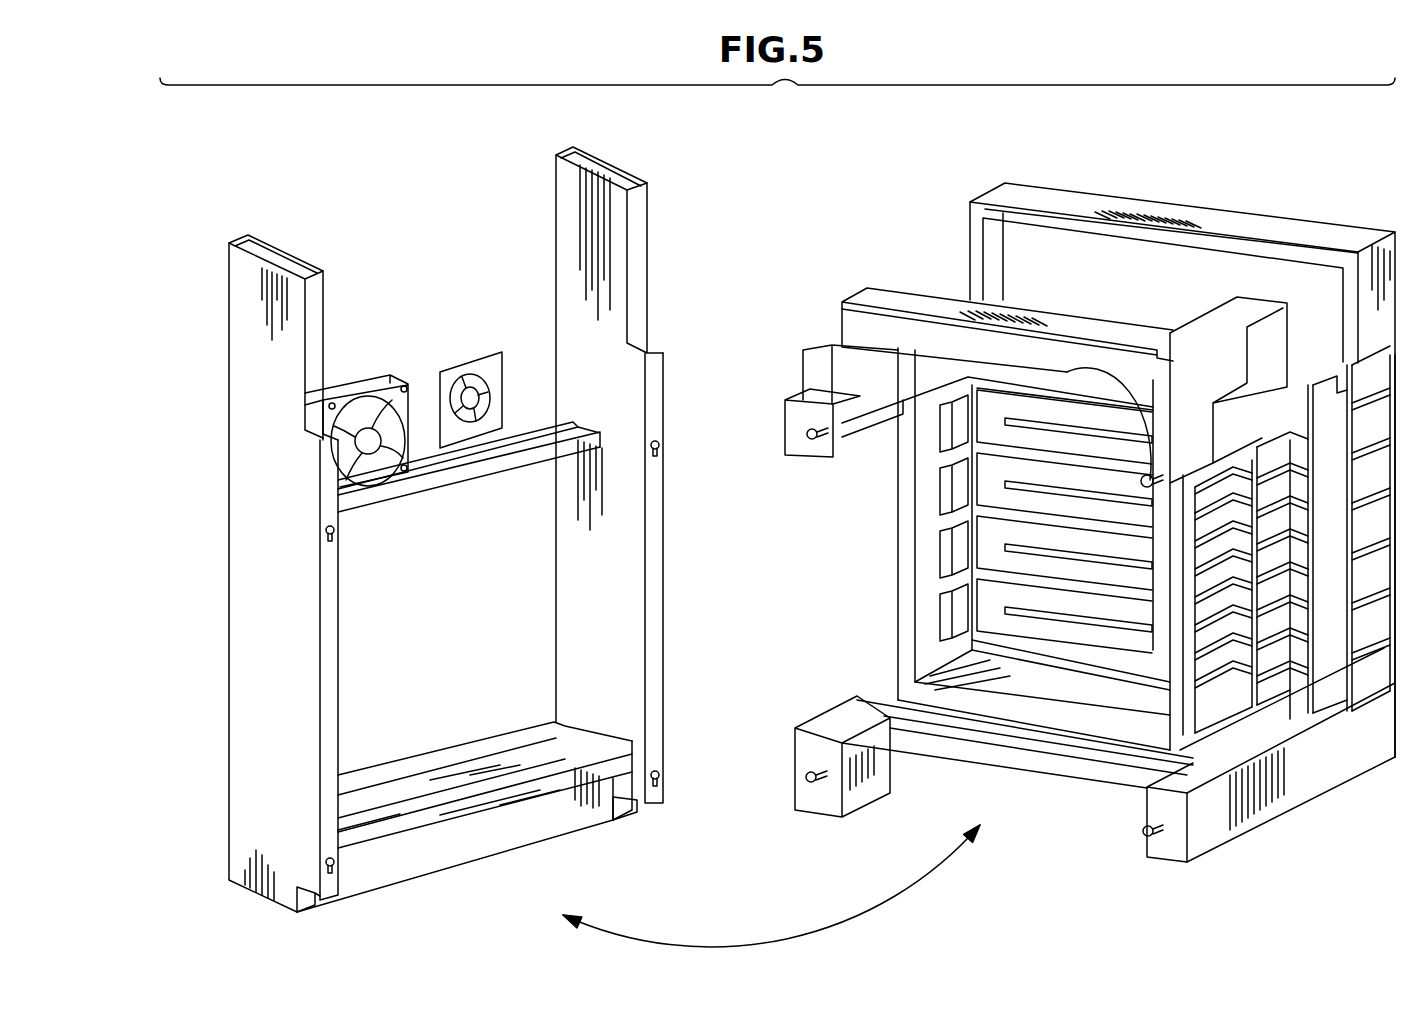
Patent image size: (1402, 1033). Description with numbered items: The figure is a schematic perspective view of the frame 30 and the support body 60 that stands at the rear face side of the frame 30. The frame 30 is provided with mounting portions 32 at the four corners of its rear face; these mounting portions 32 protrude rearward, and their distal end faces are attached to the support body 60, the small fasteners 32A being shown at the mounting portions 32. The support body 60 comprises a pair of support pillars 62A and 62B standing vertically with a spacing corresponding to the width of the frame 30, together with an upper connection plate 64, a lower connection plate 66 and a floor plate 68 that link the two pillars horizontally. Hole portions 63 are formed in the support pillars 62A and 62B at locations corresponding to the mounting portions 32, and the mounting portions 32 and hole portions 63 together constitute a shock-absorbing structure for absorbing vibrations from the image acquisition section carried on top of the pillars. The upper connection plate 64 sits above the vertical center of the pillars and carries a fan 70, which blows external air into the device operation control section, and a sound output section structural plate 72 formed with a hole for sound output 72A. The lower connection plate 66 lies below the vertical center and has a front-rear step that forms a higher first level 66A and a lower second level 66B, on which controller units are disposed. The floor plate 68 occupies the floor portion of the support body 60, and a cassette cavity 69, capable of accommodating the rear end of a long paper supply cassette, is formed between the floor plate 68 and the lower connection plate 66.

The frame 30 is at (882, 185).
The mounting portion 32 is at (805, 455).
The screw 32A is at (830, 447).
The support body 60 is at (418, 185).
The support pillar 62A is at (230, 562).
The support pillar 62B is at (655, 562).
The hole portion 63 is at (662, 444).
The upper connection plate 64 is at (440, 478).
The lower connection plate 66 is at (740, 655).
The first level 66A is at (612, 738).
The second level 66B is at (568, 720).
The floor plate 68 is at (430, 850).
The cassette cavity 69 is at (493, 850).
The fan 70 is at (373, 385).
The sound output section structural plate 72 is at (490, 355).
The hole for sound output 72A is at (470, 392).